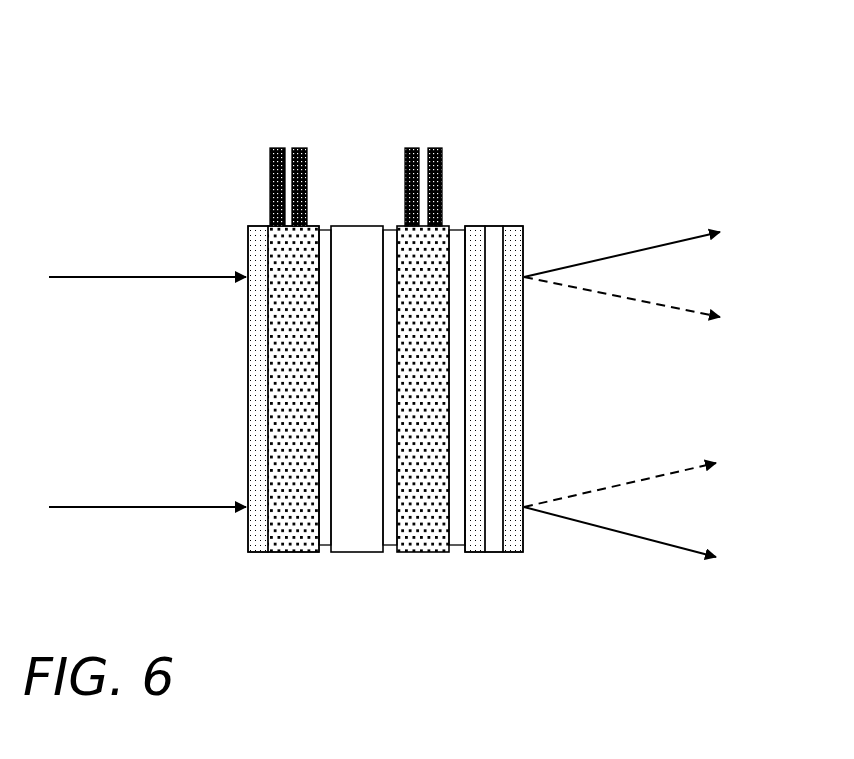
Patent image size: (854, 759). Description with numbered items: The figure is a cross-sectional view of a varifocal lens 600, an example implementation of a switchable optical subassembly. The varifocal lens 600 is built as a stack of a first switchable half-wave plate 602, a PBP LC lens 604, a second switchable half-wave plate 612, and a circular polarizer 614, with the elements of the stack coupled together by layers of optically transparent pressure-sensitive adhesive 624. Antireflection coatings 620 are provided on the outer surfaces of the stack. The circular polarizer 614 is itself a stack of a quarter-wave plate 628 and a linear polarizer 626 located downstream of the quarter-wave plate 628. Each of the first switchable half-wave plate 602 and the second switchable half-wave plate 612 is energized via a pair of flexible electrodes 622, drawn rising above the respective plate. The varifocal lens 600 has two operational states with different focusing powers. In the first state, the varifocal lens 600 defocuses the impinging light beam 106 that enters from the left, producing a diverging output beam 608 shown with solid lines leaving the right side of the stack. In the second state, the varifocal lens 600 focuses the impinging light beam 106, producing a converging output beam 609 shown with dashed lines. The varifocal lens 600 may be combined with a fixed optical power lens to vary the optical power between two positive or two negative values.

The varifocal lens 600 is at (636, 120).
The impinging light beam 106 is at (147, 409).
The first switchable half-wave plate 602 is at (296, 540).
The PBP LC lens 604 is at (358, 540).
The second switchable half-wave plate 612 is at (420, 540).
The circular polarizer 614 is at (523, 379).
The antireflection coatings 620 is at (255, 243).
The flexible electrodes 622 is at (273, 155).
The optically transparent pressure-sensitive adhesive 624 is at (324, 237).
The linear polarizer 626 is at (494, 228).
The quarter-wave plate 628 is at (478, 237).
The diverging output beam 608 is at (662, 245).
The converging output beam 609 is at (605, 293).